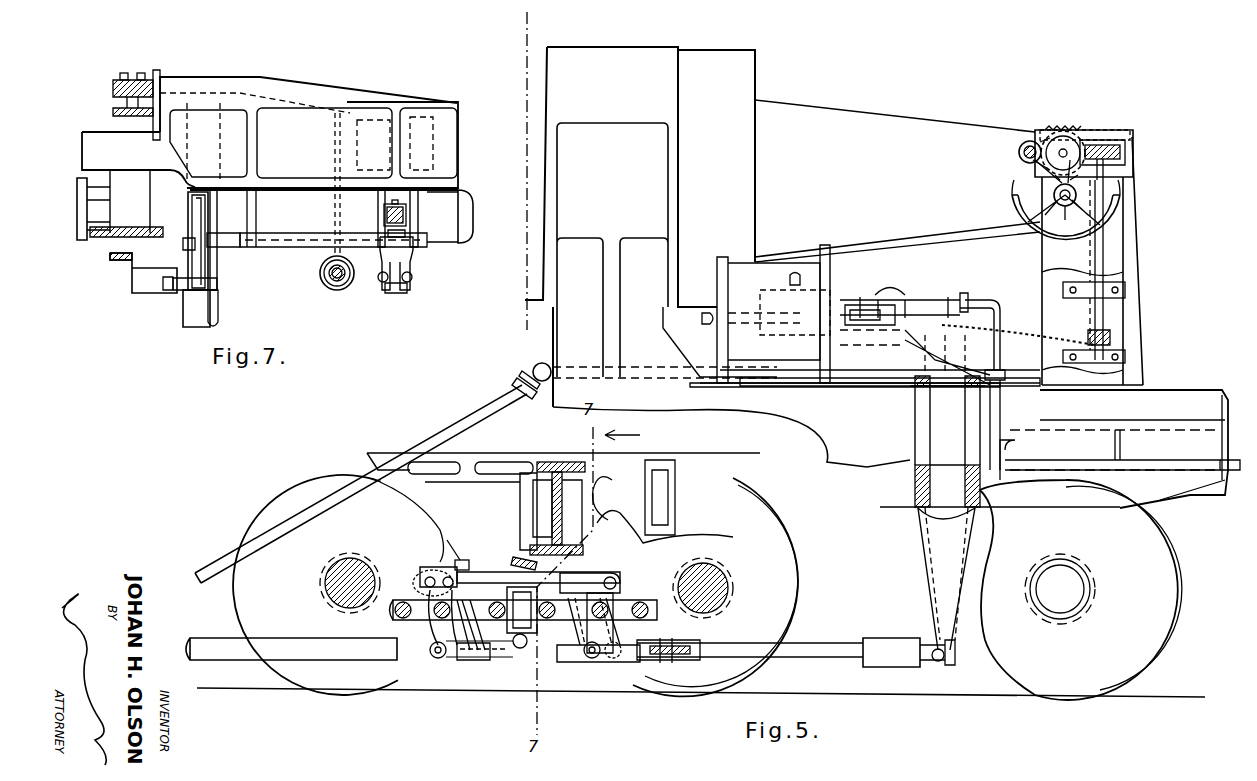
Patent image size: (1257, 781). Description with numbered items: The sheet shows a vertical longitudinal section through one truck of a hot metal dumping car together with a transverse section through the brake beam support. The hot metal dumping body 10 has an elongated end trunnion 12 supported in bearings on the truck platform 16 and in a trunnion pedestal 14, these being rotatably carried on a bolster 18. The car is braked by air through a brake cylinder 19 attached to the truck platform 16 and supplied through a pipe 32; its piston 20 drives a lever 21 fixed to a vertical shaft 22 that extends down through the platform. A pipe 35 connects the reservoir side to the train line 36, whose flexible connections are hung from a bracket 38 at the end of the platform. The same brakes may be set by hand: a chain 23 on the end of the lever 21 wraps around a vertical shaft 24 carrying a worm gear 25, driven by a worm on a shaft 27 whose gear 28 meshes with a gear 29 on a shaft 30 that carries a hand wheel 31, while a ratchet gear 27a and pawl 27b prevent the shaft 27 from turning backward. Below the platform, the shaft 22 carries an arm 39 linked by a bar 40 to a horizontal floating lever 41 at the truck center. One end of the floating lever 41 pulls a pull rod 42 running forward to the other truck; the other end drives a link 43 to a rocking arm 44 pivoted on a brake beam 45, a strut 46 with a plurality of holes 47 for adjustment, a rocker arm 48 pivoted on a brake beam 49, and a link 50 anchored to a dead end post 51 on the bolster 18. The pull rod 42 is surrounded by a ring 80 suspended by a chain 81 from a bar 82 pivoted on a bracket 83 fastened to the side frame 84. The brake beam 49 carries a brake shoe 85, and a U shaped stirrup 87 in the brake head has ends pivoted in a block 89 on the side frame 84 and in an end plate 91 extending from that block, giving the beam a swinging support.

In FIG. 5, the hot metal dumping body 10 is at (602, 47).
In FIG. 5, the end trunnion 12 is at (874, 120).
In FIG. 5, the trunnion pedestal 14 is at (1135, 142).
In FIG. 5, the truck platform 16 is at (1185, 392).
In FIG. 5, the bolster 18 is at (655, 460).
In FIG. 5, the brake cylinder 19 is at (845, 316).
In FIG. 5, the piston 20 is at (880, 305).
In FIG. 5, the lever 21 is at (908, 384).
In FIG. 5, the vertical shaft 22 is at (1000, 446).
In FIG. 5, the chain 23 is at (1088, 312).
In FIG. 5, the vertical shaft 24 is at (1108, 318).
In FIG. 5, the worm gear 25 is at (1112, 145).
In FIG. 5, the shaft 27 is at (1068, 140).
In FIG. 5, the ratchet gear 27a is at (1048, 162).
In FIG. 5, the pawl 27b is at (1022, 152).
In FIG. 5, the gear 28 is at (1052, 132).
In FIG. 5, the gear 29 is at (1064, 199).
In FIG. 5, the shaft 30 is at (1052, 193).
In FIG. 5, the hand wheel 31 is at (1012, 206).
In FIG. 5, the pipe 32 is at (702, 319).
In FIG. 5, the pipe 35 is at (992, 300).
In FIG. 5, the train line 36 is at (470, 420).
In FIG. 5, the bracket 38 is at (538, 362).
In FIG. 5, the arm 39 is at (920, 555).
In FIG. 5, the bar 40 is at (838, 653).
In FIG. 5, the floating lever 41 is at (695, 660).
In FIG. 7, the pull rod 42 is at (342, 287).
In FIG. 5, the pull rod 42 is at (302, 643).
In FIG. 5, the link 43 is at (625, 660).
In FIG. 5, the rocking arm 44 is at (618, 592).
In FIG. 5, the brake beam 45 is at (650, 612).
In FIG. 7, the strut 46 is at (386, 213).
In FIG. 5, the strut 46 is at (497, 575).
In FIG. 5, the holes 47 is at (433, 570).
In FIG. 7, the rocker arm 48 is at (410, 261).
In FIG. 5, the rocker arm 48 is at (432, 628).
In FIG. 7, the brake beam 49 is at (272, 243).
In FIG. 5, the brake beam 49 is at (403, 600).
In FIG. 7, the link 50 is at (405, 288).
In FIG. 5, the link 50 is at (485, 655).
In FIG. 7, the dead end post 51 is at (418, 220).
In FIG. 5, the dead end post 51 is at (520, 500).
In FIG. 7, the ring 80 is at (321, 270).
In FIG. 7, the chain 81 is at (337, 130).
In FIG. 7, the bar 82 is at (278, 92).
In FIG. 7, the bracket 83 is at (113, 85).
In FIG. 7, the side frame 84 is at (113, 108).
In FIG. 7, the brake shoe 85 is at (192, 206).
In FIG. 7, the U shaped stirrup 87 is at (220, 262).
In FIG. 7, the block 89 is at (158, 290).
In FIG. 7, the end plate 91 is at (215, 292).